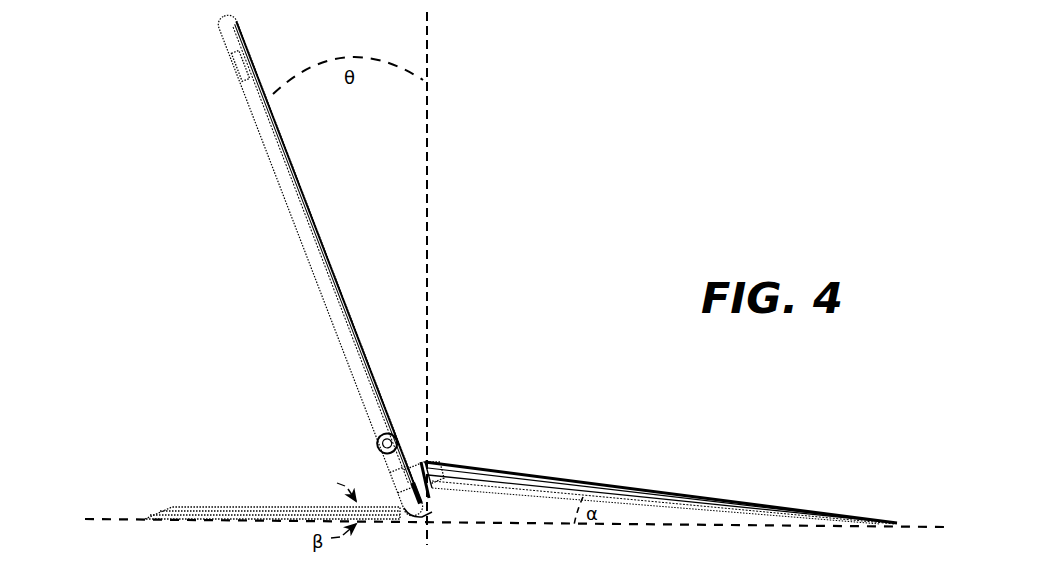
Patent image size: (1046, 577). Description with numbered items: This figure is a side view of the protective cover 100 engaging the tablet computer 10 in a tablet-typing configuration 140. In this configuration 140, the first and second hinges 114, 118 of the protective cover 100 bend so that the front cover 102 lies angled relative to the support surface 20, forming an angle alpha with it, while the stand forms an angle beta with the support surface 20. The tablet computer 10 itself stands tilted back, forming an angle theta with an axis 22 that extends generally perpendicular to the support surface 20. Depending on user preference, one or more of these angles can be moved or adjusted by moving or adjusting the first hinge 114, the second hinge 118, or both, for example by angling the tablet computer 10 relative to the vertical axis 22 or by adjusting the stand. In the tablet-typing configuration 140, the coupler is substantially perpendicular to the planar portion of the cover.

The tablet computer 10 is at (337, 237).
The support surface 20 is at (901, 523).
The axis 22 is at (432, 136).
The protective cover 100 is at (548, 251).
The front cover 102 is at (789, 497).
The first hinge 114 is at (418, 462).
The second hinge 118 is at (430, 497).
The tablet-typing configuration 140 is at (548, 346).